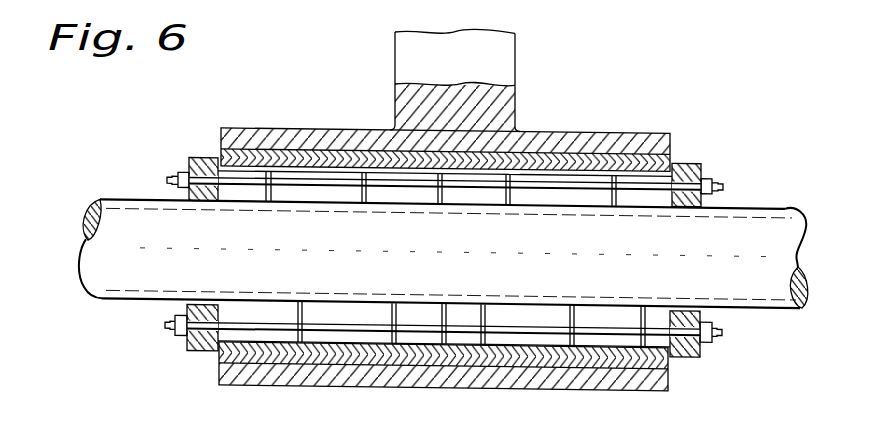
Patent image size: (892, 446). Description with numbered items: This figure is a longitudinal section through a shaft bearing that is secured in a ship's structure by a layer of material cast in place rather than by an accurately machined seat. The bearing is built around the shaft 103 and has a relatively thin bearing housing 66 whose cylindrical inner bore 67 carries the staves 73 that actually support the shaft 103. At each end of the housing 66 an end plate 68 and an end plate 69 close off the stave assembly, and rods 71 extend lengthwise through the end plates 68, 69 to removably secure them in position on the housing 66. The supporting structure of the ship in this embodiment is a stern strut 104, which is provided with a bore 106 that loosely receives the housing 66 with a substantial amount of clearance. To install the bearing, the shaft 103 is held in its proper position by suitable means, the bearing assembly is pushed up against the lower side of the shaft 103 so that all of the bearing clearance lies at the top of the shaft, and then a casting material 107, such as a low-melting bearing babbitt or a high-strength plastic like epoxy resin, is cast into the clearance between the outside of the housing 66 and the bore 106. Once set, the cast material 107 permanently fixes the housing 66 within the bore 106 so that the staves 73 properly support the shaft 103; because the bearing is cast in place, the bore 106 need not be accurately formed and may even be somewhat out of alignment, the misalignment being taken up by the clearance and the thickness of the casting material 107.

The shaft 103 is at (778, 216).
The stern strut 104 is at (509, 95).
The bore 106 is at (613, 152).
The casting material 107 is at (675, 158).
The end plate 69 is at (195, 156).
The end plate 68 is at (196, 352).
The staves 73 is at (315, 196).
The rods 71 is at (595, 174).
The bearing housing 66 is at (428, 167).
The cylindrical inner bore 67 is at (493, 165).